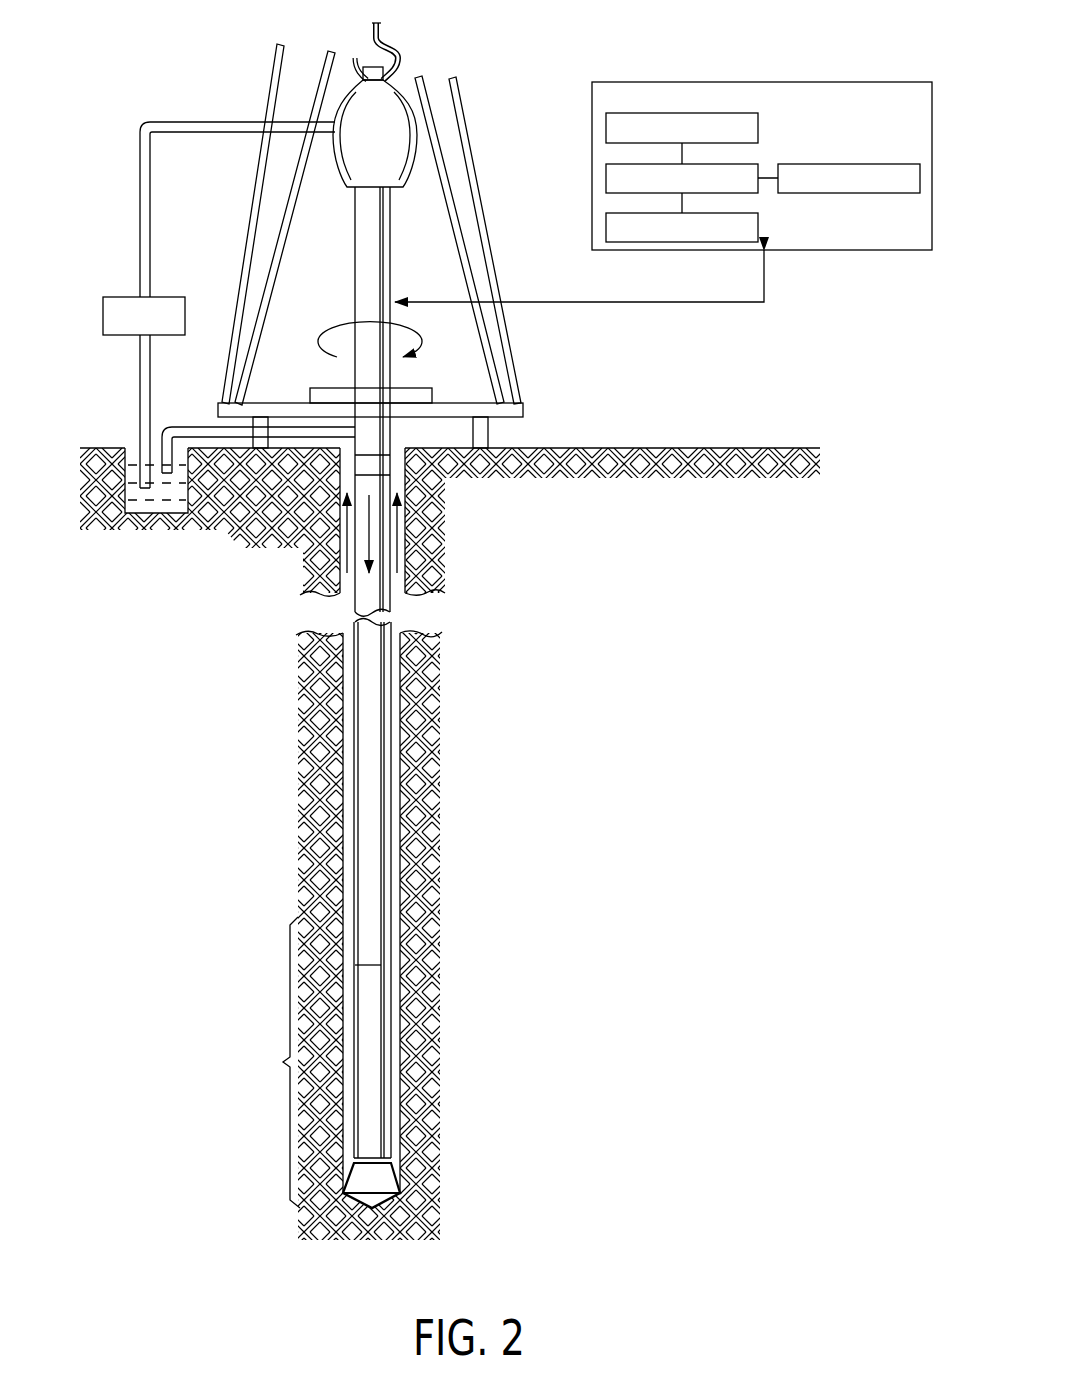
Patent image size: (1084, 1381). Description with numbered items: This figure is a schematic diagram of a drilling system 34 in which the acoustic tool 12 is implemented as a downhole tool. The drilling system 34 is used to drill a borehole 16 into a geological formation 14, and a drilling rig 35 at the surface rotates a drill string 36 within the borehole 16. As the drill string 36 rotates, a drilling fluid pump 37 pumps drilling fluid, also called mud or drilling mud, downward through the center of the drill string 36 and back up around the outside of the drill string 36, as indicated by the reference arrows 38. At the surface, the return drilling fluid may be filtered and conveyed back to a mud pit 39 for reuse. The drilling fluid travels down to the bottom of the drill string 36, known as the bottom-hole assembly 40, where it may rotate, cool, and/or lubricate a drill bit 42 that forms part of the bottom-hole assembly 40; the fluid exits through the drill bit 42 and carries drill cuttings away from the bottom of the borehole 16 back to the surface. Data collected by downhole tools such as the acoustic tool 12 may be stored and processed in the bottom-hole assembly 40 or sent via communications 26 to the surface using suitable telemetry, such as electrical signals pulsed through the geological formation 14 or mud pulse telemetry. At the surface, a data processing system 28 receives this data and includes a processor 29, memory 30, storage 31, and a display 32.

The acoustic tool 12 is at (378, 988).
The geological formation 14 is at (551, 812).
The borehole 16 is at (340, 776).
The communications 26 is at (648, 306).
The data processing system 28 is at (765, 82).
The processor 29 is at (735, 164).
The memory 30 is at (606, 127).
The storage 31 is at (758, 226).
The display 32 is at (850, 164).
The drilling system 34 is at (545, 27).
The drilling rig 35 is at (494, 103).
The drill string 36 is at (370, 443).
The drilling fluid pump 37 is at (103, 314).
The reference arrows 38 is at (378, 547).
The mud pit 39 is at (160, 505).
The bottom-hole assembly 40 is at (276, 1062).
The drill bit 42 is at (378, 1181).